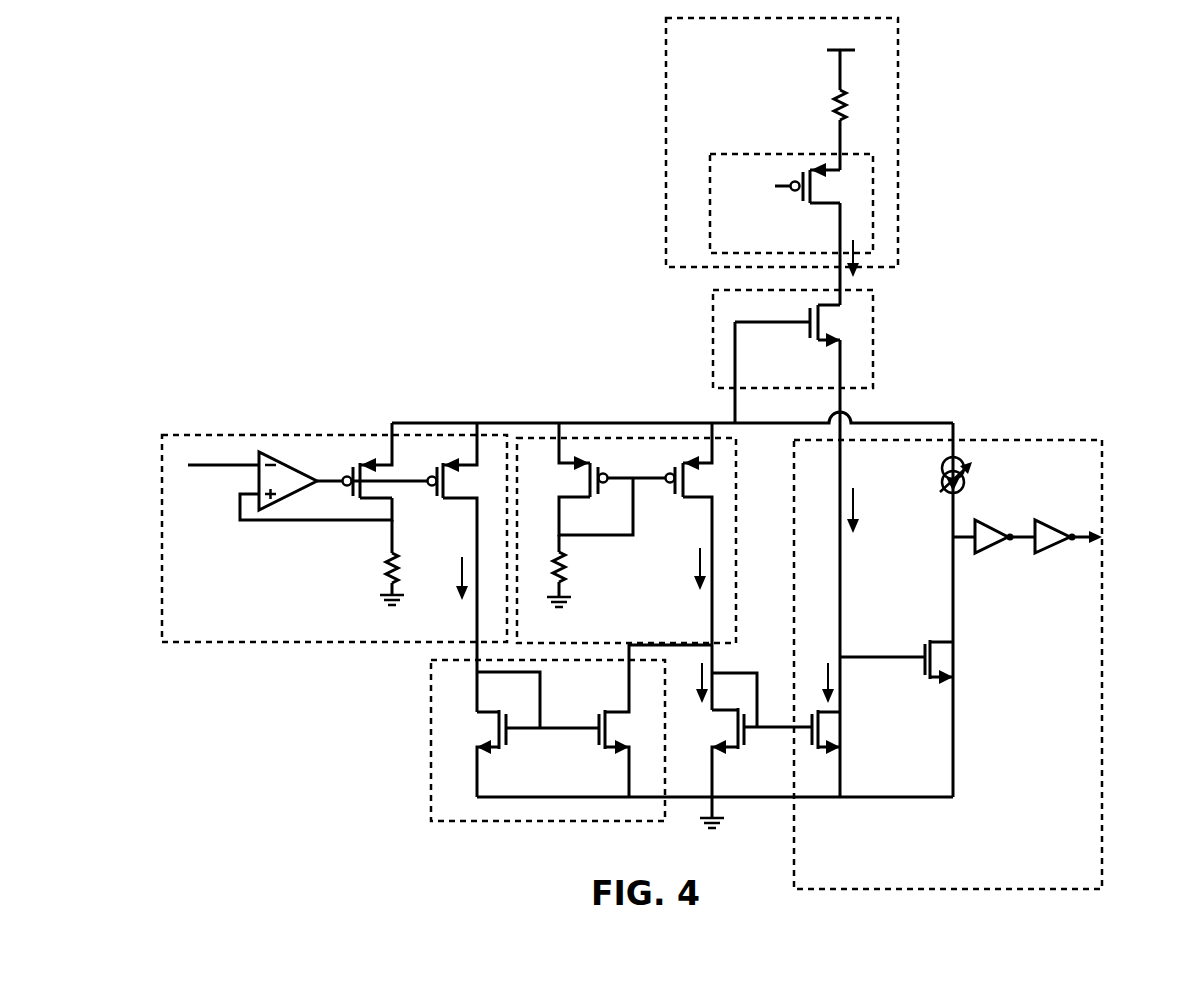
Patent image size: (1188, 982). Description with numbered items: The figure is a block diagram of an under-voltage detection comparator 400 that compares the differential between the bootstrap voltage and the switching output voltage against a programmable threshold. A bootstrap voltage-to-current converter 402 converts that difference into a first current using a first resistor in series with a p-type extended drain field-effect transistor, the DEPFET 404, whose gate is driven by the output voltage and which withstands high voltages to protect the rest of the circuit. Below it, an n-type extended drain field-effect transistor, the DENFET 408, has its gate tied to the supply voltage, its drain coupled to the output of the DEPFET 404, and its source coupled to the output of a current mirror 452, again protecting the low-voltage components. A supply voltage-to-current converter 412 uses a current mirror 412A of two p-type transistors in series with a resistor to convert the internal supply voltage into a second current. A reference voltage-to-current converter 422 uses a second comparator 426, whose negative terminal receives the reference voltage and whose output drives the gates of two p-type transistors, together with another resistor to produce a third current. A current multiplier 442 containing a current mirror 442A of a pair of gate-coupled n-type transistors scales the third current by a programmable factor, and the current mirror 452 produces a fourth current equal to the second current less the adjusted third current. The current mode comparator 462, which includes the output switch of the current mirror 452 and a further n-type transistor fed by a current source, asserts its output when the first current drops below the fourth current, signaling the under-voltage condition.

The under-voltage detection comparator 400 is at (438, 184).
The bootstrap voltage-to-current converter 402 is at (898, 77).
The p-type extended drain field-effect transistor (DEPFET) 404 is at (873, 203).
The n-type extended drain field-effect transistor (DENFET) 408 is at (873, 322).
The supply voltage-to-current converter 412 is at (545, 437).
The current mirror 412A is at (654, 448).
The reference voltage-to-current converter 422 is at (277, 433).
The second comparator 426 is at (278, 462).
The current multiplier 442 is at (430, 722).
The current mirror 442A is at (518, 766).
The current mirror 452 is at (765, 773).
The current mode comparator 462 is at (1073, 438).